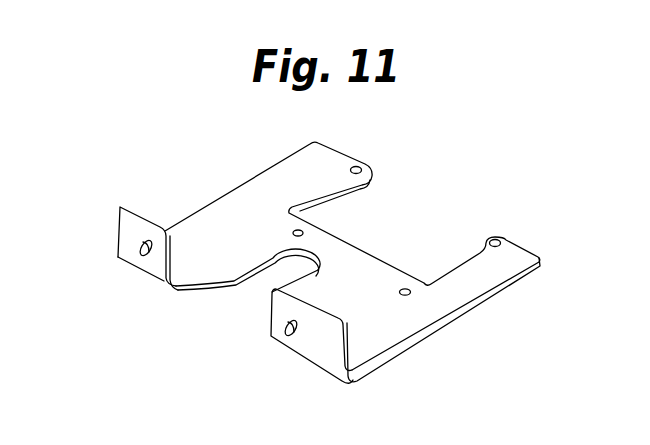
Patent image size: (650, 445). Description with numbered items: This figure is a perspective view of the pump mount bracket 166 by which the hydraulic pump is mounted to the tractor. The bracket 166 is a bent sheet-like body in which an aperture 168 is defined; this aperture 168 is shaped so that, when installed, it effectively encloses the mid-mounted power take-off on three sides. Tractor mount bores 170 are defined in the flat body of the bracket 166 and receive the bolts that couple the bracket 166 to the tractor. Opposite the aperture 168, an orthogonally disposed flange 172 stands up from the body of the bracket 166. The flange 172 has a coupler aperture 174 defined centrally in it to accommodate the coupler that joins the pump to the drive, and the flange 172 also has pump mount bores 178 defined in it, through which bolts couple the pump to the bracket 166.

The bracket 166 is at (228, 140).
The aperture 168 is at (464, 262).
The tractor mount bores 170 is at (361, 166).
The flange 172 is at (123, 222).
The coupler aperture 174 is at (178, 252).
The pump mount bores 178 is at (143, 258).